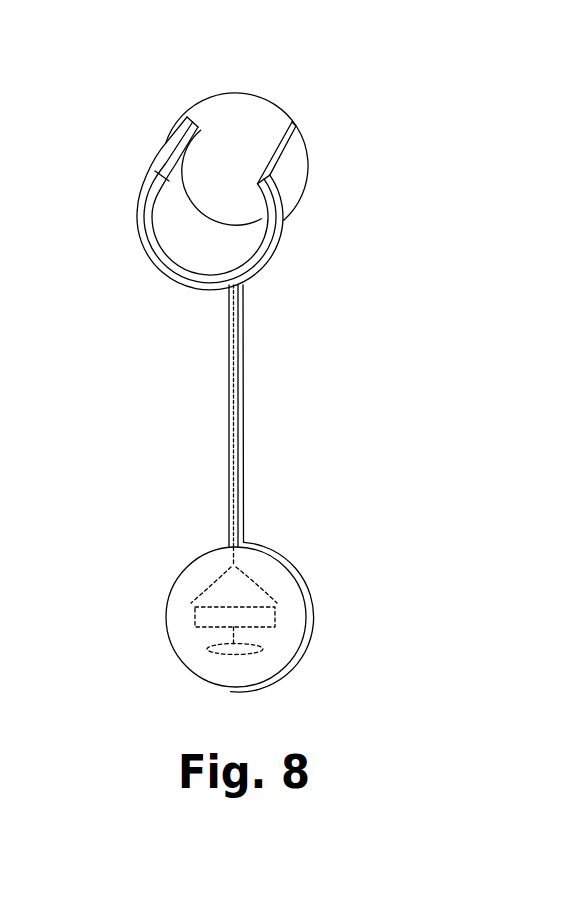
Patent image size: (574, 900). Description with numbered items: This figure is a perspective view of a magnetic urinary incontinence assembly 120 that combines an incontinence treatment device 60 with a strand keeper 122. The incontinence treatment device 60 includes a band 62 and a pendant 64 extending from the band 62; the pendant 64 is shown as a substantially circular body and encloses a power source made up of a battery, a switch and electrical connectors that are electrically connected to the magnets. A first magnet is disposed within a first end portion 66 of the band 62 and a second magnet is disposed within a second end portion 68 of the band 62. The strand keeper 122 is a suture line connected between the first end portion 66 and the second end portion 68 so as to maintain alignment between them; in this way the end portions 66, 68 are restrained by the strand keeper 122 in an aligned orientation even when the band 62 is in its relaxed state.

The incontinence treatment device 60 is at (306, 398).
The band 62 is at (288, 207).
The pendant 64 is at (283, 563).
The first end portion 66 is at (163, 211).
The second end portion 68 is at (292, 157).
The magnetic urinary incontinence assembly 120 is at (320, 80).
The strand keeper 122 is at (240, 93).